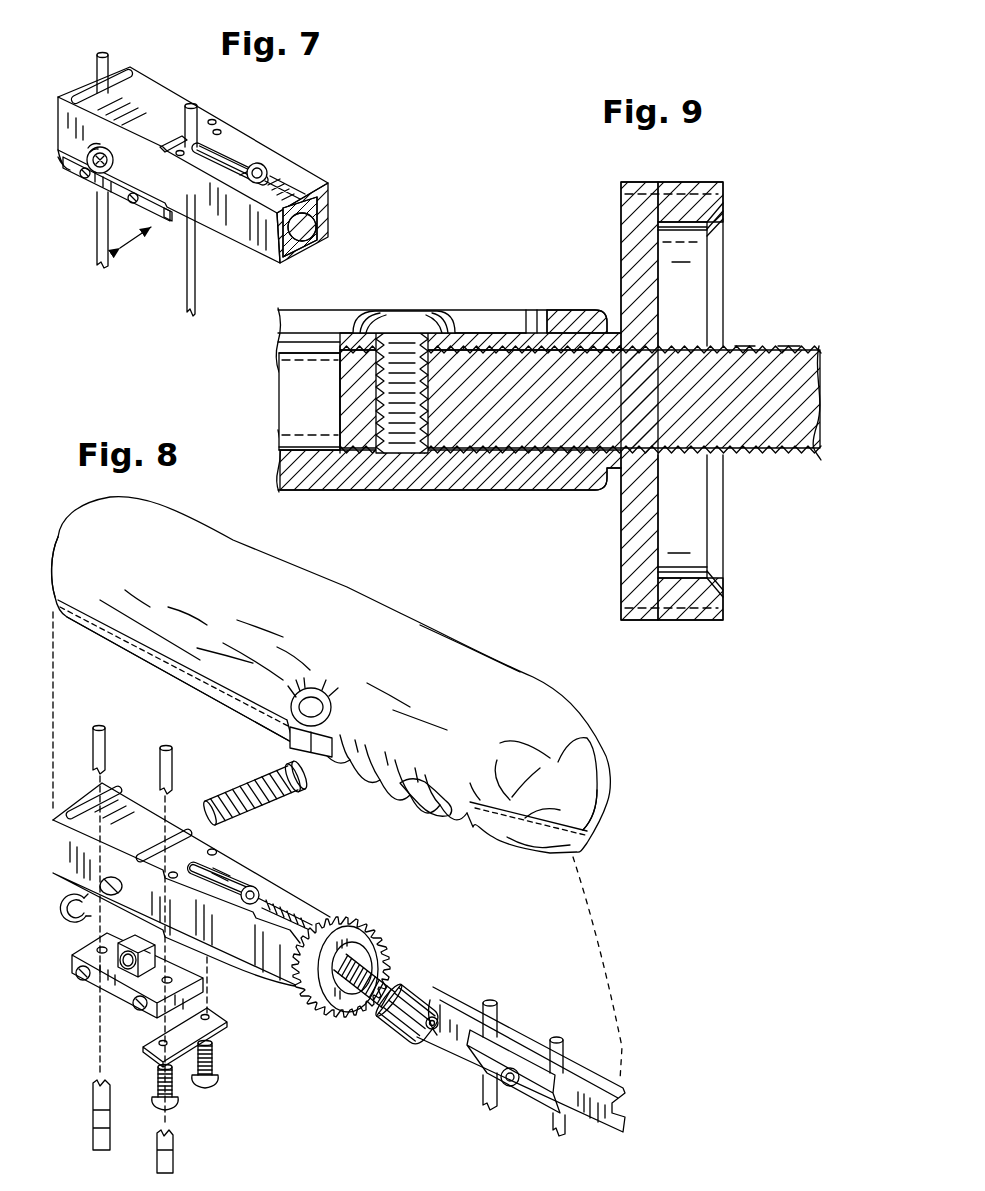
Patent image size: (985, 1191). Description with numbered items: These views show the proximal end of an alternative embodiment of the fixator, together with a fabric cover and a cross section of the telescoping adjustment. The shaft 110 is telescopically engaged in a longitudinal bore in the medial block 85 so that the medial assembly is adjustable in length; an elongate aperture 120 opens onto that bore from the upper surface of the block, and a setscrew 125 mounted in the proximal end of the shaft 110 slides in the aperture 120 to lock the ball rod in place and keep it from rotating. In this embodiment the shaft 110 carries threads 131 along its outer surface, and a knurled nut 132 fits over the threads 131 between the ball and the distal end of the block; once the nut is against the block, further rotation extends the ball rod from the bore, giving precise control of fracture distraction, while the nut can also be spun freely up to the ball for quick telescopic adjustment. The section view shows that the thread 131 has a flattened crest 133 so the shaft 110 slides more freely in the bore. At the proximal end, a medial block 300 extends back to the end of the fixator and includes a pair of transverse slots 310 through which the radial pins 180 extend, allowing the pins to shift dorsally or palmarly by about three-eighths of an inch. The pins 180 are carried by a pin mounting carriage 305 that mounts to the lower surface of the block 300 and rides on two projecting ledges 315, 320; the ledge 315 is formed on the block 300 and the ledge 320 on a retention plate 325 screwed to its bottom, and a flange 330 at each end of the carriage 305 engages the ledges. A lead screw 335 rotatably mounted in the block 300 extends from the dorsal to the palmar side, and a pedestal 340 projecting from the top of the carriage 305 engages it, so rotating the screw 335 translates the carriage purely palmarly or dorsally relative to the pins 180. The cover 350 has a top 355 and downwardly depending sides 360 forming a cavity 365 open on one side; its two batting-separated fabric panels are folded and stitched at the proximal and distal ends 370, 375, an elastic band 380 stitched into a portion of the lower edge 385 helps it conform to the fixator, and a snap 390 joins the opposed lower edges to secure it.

In FIG. 7, the medial block 85 is at (303, 257).
In FIG. 9, the medial block 85 is at (427, 489).
In FIG. 7, the shaft 110 is at (328, 215).
In FIG. 9, the shaft 110 is at (780, 433).
In FIG. 8, the shaft 110 is at (343, 993).
In FIG. 7, the elongate aperture 120 is at (218, 152).
In FIG. 9, the elongate aperture 120 is at (529, 314).
In FIG. 8, the elongate aperture 120 is at (214, 871).
In FIG. 7, the setscrew 125 is at (268, 172).
In FIG. 9, the setscrew 125 is at (453, 311).
In FIG. 8, the setscrew 125 is at (263, 891).
In FIG. 9, the threads 131 is at (790, 345).
In FIG. 8, the threads 131 is at (393, 969).
In FIG. 9, the knurled nut 132 is at (715, 182).
In FIG. 8, the knurled nut 132 is at (368, 918).
In FIG. 9, the flattened crest 133 is at (745, 344).
In FIG. 7, the radial pins 180 is at (190, 280).
In FIG. 7, the medial block 300 is at (263, 144).
In FIG. 8, the medial block 300 is at (241, 860).
In FIG. 7, the pin mounting carriage 305 is at (78, 192).
In FIG. 8, the pin mounting carriage 305 is at (92, 995).
In FIG. 7, the transverse slots 310 is at (176, 139).
In FIG. 8, the transverse slots 310 is at (160, 838).
In FIG. 7, the ledge 315 is at (68, 168).
In FIG. 8, the ledge 315 is at (60, 903).
In FIG. 7, the ledge 320 is at (157, 214).
In FIG. 8, the ledge 320 is at (143, 1045).
In FIG. 7, the retention plate 325 is at (165, 219).
In FIG. 8, the retention plate 325 is at (224, 1022).
In FIG. 8, the flange 330 is at (70, 957).
In FIG. 7, the lead screw 335 is at (122, 164).
In FIG. 8, the lead screw 335 is at (303, 784).
In FIG. 8, the pedestal 340 is at (155, 958).
In FIG. 8, the cover 350 is at (422, 618).
In FIG. 8, the top 355 is at (508, 682).
In FIG. 8, the sides 360 is at (112, 628).
In FIG. 8, the cavity 365 is at (381, 793).
In FIG. 8, the proximal end 370 is at (43, 545).
In FIG. 8, the distal end 375 is at (607, 758).
In FIG. 8, the elastic band 380 is at (420, 776).
In FIG. 8, the lower edge 385 is at (197, 700).
In FIG. 8, the snap 390 is at (331, 677).